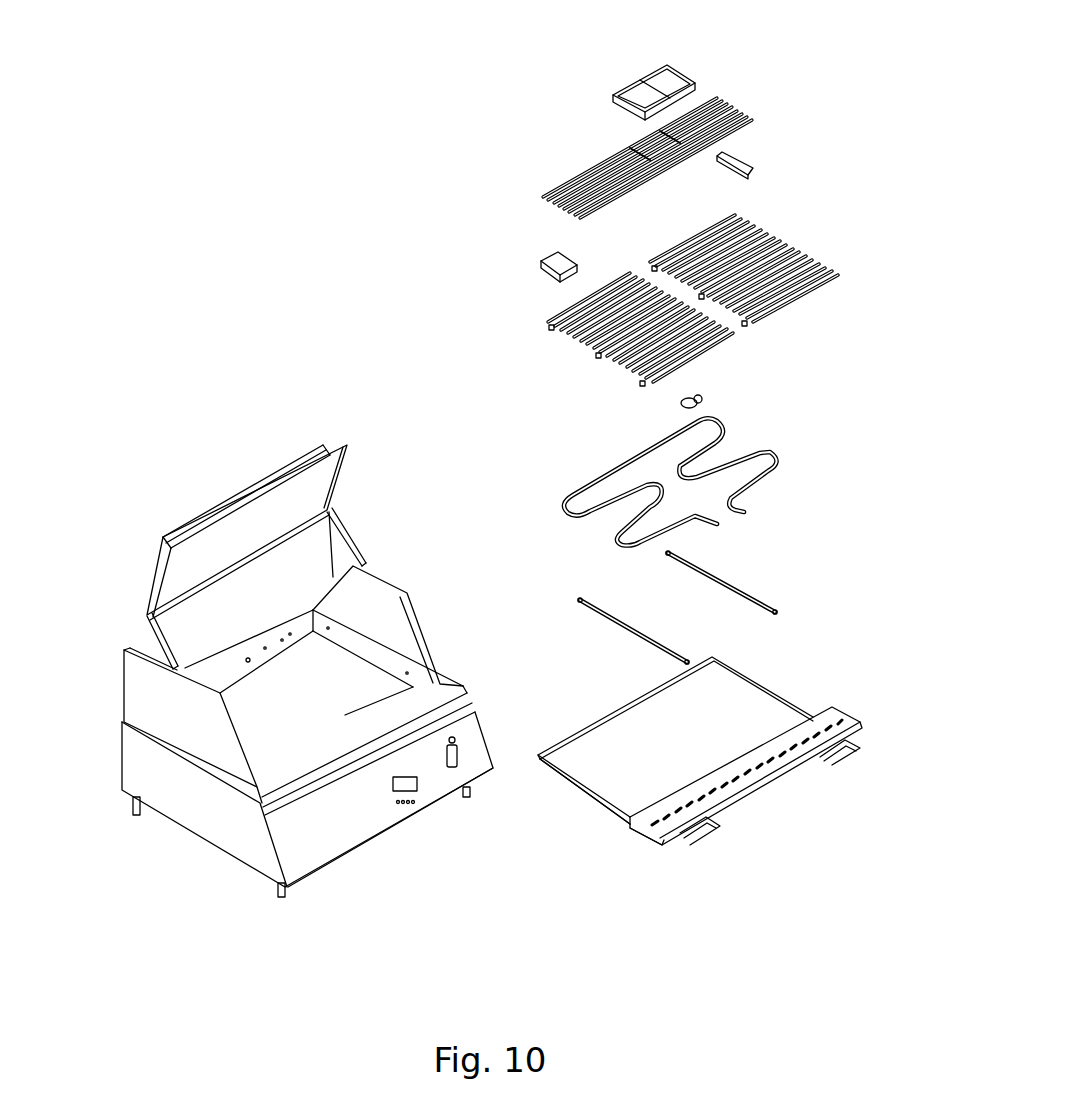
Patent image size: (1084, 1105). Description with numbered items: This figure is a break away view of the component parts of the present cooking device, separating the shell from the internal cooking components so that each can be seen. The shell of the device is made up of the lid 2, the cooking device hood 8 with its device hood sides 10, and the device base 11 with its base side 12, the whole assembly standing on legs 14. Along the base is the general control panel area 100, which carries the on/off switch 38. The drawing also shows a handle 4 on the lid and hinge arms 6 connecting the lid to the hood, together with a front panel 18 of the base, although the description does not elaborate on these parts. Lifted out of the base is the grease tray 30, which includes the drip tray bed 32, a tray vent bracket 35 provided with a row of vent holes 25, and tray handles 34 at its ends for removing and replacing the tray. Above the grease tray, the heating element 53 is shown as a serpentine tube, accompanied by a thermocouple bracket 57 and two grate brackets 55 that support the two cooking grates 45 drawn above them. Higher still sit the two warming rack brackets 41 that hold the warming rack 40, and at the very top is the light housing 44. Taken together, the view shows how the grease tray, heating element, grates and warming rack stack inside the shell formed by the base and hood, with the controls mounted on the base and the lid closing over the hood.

The lid 2 is at (252, 513).
The lid handle 4 is at (312, 447).
The hinge arm 6 is at (329, 586).
The cooking device hood 8 is at (148, 648).
The device hood sides 10 is at (387, 610).
The device base 11 is at (135, 727).
The base side 12 is at (183, 803).
The legs 14 is at (133, 815).
The base front panel 18 is at (357, 825).
The vent holes 25 is at (667, 843).
The grease tray 30 is at (595, 797).
The drip tray bed 32 is at (743, 703).
The tray handles 34 is at (845, 758).
The tray vent bracket 35 is at (757, 790).
The on/off switch 38 is at (457, 750).
The warming rack 40 is at (575, 172).
The warming rack brackets 41 is at (743, 160).
The light housing 44 is at (658, 85).
The cooking grates 45 is at (773, 228).
The heating element 53 is at (573, 487).
The grate brackets 55 is at (723, 577).
The thermocouple bracket 57 is at (704, 404).
The general control panel area 100 is at (412, 802).